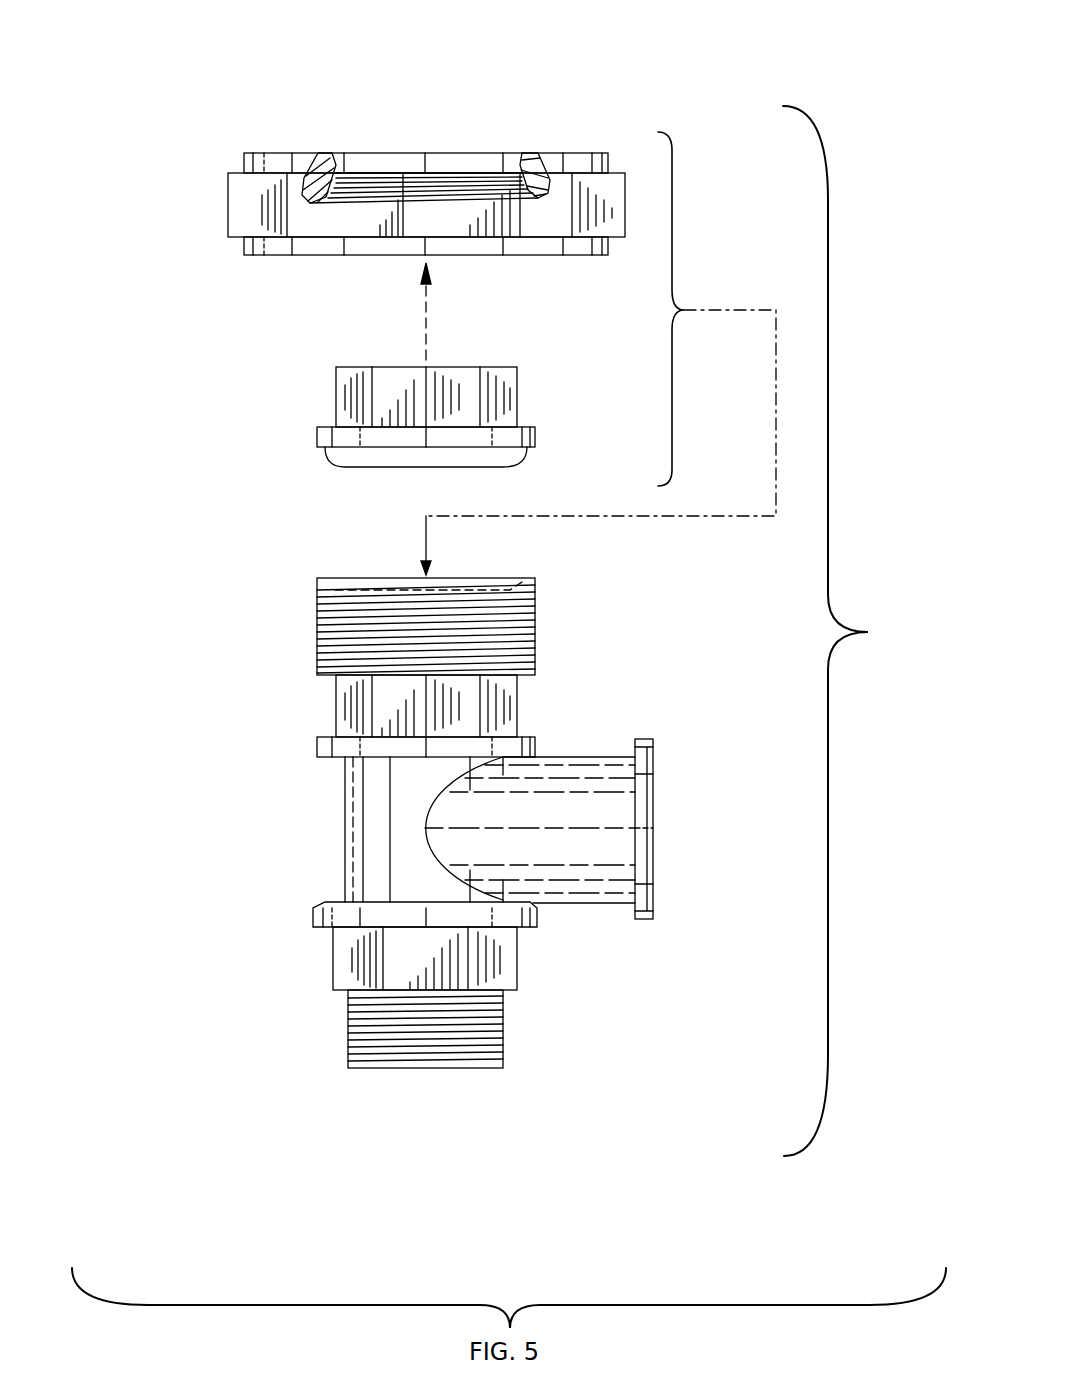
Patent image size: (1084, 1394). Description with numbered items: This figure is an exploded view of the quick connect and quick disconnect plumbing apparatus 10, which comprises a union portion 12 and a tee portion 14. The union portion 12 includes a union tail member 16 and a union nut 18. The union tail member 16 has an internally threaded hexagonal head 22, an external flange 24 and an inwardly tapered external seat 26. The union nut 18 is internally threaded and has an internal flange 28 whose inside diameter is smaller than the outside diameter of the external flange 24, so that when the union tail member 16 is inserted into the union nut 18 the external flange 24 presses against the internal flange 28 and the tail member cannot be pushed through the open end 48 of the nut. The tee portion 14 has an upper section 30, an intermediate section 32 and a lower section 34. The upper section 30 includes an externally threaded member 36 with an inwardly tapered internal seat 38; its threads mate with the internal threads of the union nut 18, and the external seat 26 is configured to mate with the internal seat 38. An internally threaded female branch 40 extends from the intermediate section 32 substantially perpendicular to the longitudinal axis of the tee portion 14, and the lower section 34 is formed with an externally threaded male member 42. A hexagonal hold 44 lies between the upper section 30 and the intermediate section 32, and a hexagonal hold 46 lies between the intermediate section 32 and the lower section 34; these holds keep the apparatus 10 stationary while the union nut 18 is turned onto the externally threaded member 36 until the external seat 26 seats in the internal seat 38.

The quick connect and quick disconnect plumbing apparatus 10 is at (845, 631).
The union portion 12 is at (212, 88).
The tee portion 14 is at (615, 801).
The union tail member 16 is at (432, 426).
The union nut 18 is at (371, 177).
The internally threaded hexagonal head 22 is at (518, 398).
The external flange 24 is at (535, 437).
The inwardly tapered external seat 26 is at (383, 467).
The internal flange 28 is at (333, 162).
The upper section 30 is at (420, 648).
The intermediate section 32 is at (463, 805).
The lower section 34 is at (417, 1006).
The externally threaded member 36 is at (535, 643).
The inwardly tapered internal seat 38 is at (352, 578).
The internally threaded female branch 40 is at (653, 860).
The externally threaded male member 42 is at (502, 1038).
The hexagonal hold 44 is at (330, 704).
The hexagonal hold 46 is at (514, 971).
The open end 48 is at (550, 155).